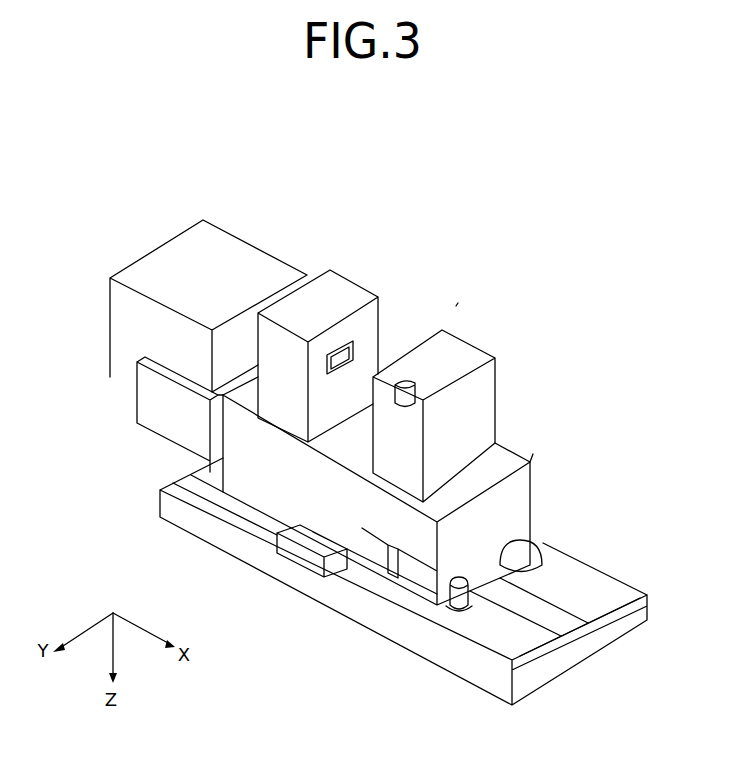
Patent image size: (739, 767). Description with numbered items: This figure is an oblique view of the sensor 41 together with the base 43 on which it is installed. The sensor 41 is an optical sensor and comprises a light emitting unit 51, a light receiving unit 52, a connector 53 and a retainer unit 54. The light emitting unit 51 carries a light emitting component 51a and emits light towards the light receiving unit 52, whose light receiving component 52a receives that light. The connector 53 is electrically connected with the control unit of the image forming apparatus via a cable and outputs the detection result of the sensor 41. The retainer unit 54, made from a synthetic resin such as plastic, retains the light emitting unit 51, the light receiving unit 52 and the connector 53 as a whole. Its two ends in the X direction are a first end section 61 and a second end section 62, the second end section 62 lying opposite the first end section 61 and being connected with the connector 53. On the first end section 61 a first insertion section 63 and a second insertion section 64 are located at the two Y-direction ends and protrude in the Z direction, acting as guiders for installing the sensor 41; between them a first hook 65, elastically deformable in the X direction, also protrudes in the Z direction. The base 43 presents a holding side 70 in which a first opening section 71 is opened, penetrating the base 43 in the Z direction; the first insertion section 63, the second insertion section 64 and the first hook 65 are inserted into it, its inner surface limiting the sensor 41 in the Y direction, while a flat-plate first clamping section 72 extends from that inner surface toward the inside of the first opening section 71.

The sensor 41 is at (460, 298).
The base 43 is at (620, 573).
The light emitting unit 51 is at (458, 348).
The light emitting component 51a is at (428, 378).
The light receiving unit 52 is at (340, 283).
The light receiving component 52a is at (378, 310).
The connector 53 is at (238, 253).
The retainer unit 54 is at (540, 450).
The first end section 61 is at (522, 488).
The second end section 62 is at (240, 438).
The first insertion section 63 is at (450, 588).
The second insertion section 64 is at (522, 546).
The first hook 65 is at (505, 580).
The holding side 70 is at (582, 602).
The first opening section 71 is at (395, 578).
The first clamping section 72 is at (473, 592).